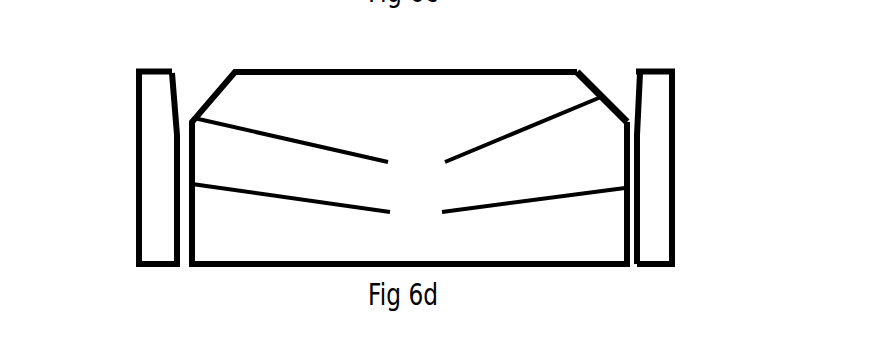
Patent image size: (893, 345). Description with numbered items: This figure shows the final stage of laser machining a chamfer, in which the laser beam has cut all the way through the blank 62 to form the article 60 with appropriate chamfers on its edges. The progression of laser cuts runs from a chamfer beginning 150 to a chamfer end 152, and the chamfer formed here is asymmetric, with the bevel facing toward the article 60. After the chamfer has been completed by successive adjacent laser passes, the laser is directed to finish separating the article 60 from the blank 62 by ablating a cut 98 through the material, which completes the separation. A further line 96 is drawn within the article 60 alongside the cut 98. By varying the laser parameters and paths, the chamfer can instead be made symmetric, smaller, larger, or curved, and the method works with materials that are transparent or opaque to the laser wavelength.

The article 60 is at (409, 168).
The blank 62 is at (640, 70).
The upper layer 96 is at (397, 138).
The cut 98 is at (408, 206).
The chamfer beginning 150 is at (576, 80).
The chamfer end 152 is at (627, 112).